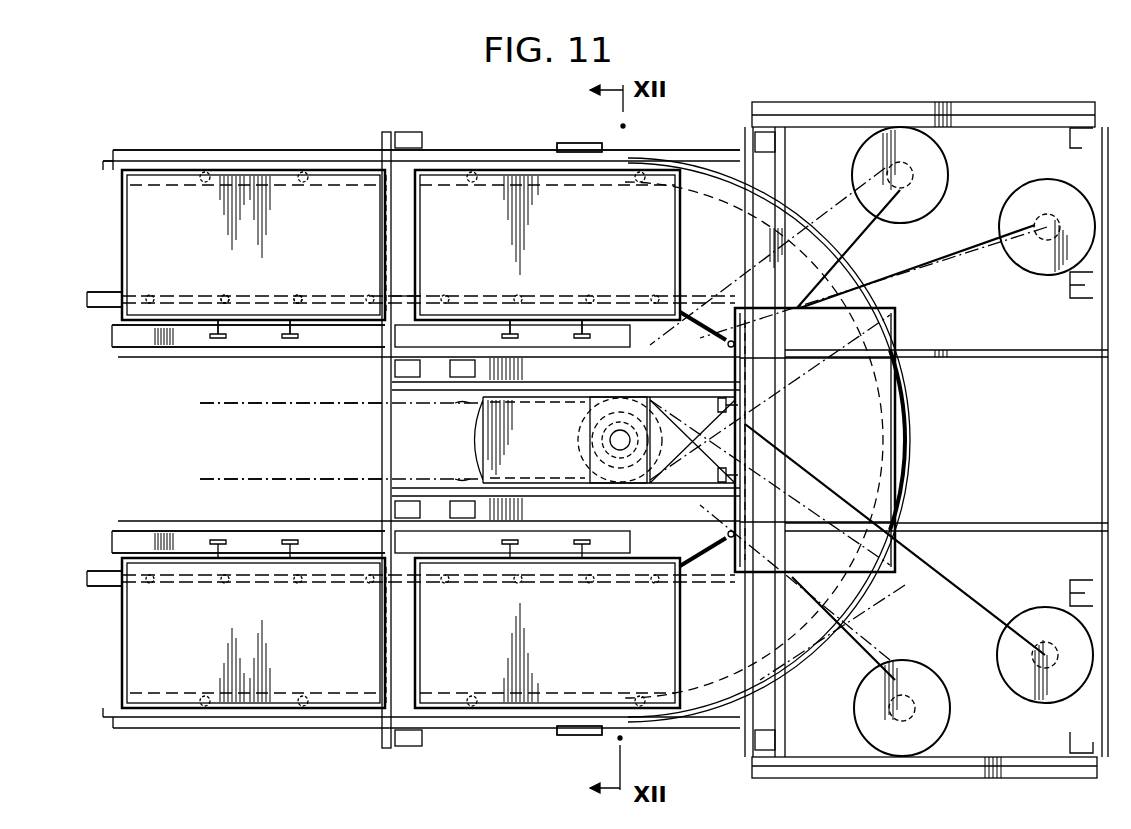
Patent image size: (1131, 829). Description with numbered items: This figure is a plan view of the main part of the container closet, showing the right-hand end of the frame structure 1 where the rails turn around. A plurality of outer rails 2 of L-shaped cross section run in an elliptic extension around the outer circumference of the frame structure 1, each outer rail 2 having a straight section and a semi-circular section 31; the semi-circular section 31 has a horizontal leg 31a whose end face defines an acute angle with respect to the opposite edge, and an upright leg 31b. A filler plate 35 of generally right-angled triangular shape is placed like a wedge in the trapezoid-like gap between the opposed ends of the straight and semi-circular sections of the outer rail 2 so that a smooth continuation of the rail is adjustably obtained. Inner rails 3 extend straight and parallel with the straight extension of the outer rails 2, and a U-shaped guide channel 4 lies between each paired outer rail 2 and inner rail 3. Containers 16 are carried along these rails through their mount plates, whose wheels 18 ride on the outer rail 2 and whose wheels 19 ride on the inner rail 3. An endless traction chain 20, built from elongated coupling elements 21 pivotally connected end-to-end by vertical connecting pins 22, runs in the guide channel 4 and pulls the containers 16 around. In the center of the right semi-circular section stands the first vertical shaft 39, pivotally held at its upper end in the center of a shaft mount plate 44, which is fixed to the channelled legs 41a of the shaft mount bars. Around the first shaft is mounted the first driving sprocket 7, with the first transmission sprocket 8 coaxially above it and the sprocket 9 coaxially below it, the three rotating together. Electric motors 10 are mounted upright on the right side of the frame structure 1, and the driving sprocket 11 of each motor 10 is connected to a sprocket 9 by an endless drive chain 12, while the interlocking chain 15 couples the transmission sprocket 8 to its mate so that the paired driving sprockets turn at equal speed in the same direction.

The frame structure 1 is at (268, 150).
The outer rail 2 is at (103, 174).
The inner rail 3 is at (112, 340).
The guide channel 4 is at (97, 292).
The first driving sprocket 7 is at (470, 440).
The first transmission sprocket 8 is at (575, 455).
The sprocket 9 is at (575, 418).
The electric motor 10 is at (942, 165).
The driving sprocket 11 is at (920, 178).
The endless drive chain 12 is at (813, 215).
The interlocking chain 15 is at (205, 479).
The container 16 is at (350, 168).
The wheel 18 is at (205, 172).
The wheel 19 is at (292, 338).
The endless traction chain 20 is at (415, 292).
The coupling element 21 is at (273, 296).
The connecting pin 22 is at (222, 296).
The semi-circular section 31 is at (905, 402).
The horizontal leg 31a is at (880, 420).
The upright leg 31b is at (905, 488).
The filler plate 35 is at (578, 143).
The first vertical shaft 39 is at (590, 440).
The channelled leg 41a is at (455, 403).
The shaft mount plate 44 is at (665, 460).